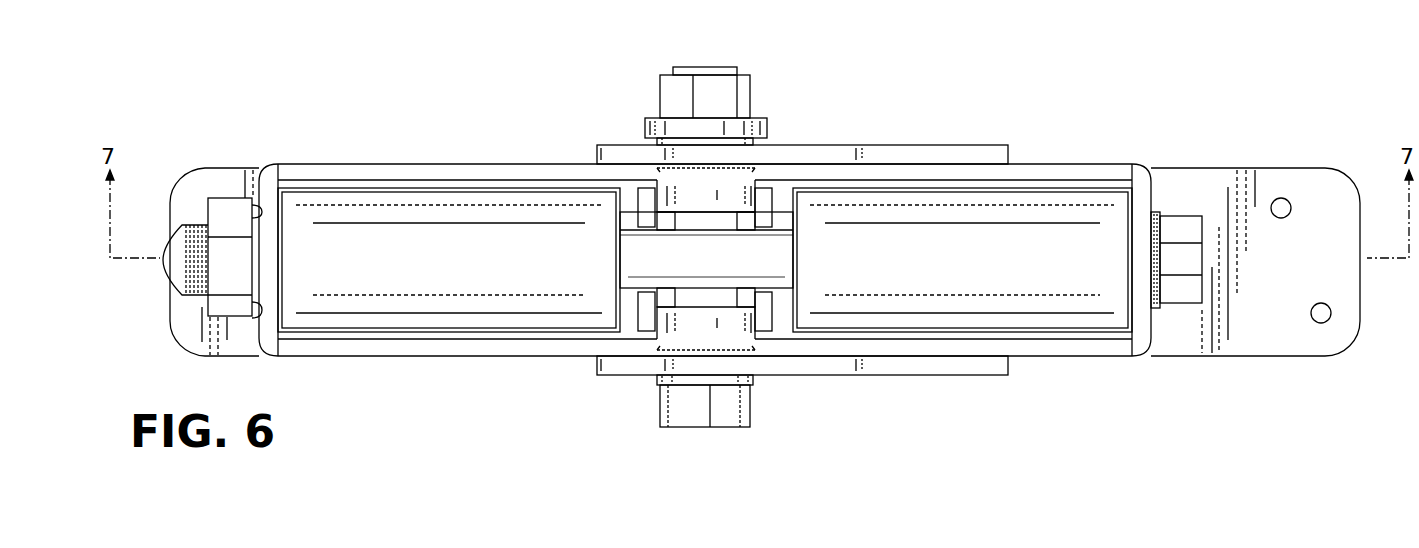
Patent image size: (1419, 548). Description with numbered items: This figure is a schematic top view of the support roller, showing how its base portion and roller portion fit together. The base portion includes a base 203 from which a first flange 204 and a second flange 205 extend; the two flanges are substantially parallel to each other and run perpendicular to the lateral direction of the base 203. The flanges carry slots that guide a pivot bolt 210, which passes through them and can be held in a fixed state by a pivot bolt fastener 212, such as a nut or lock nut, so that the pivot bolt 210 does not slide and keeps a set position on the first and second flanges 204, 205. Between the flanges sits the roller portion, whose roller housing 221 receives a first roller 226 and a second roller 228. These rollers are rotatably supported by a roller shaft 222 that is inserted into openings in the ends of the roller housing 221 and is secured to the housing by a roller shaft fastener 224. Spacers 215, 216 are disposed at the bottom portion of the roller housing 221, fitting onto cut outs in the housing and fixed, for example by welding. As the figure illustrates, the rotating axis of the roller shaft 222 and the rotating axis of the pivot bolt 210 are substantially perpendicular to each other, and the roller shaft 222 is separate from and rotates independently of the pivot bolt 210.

The base 203 is at (1322, 277).
The first flange 204 is at (965, 368).
The second flange 205 is at (976, 153).
The pivot bolt 210 is at (710, 90).
The pivot bolt fastener 212 is at (693, 408).
The spacer 215 is at (723, 320).
The spacer 216 is at (723, 205).
The roller housing 221 is at (443, 172).
The roller shaft 222 is at (1180, 228).
The roller shaft fastener 224 is at (232, 192).
The first roller 226 is at (989, 277).
The second roller 228 is at (470, 277).